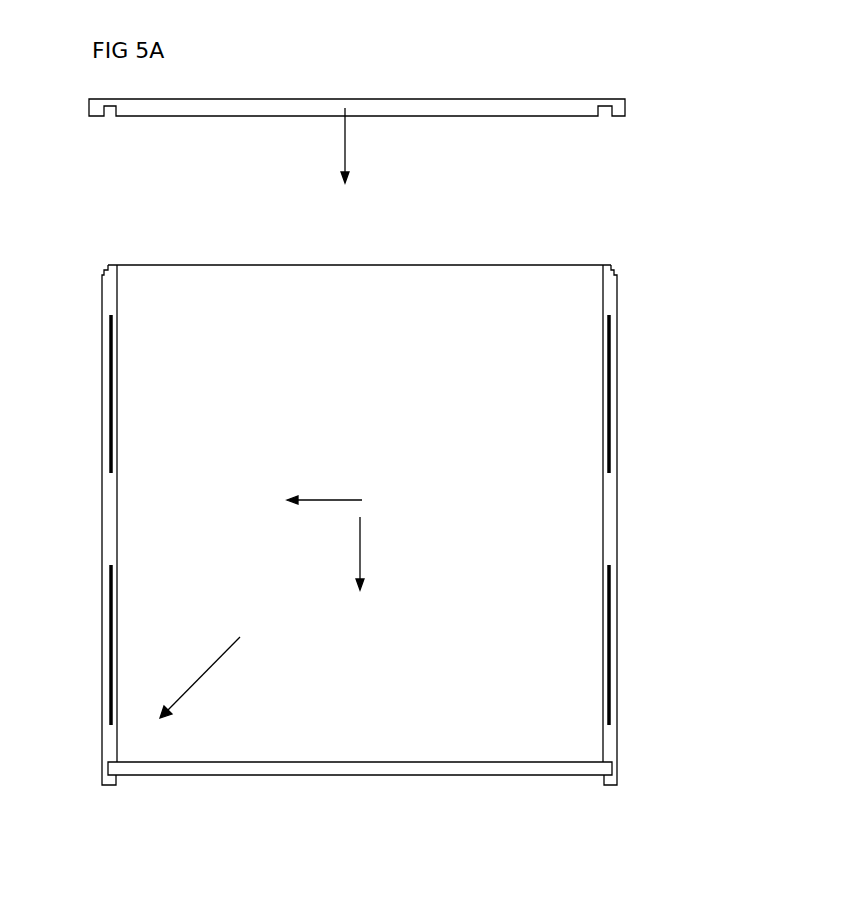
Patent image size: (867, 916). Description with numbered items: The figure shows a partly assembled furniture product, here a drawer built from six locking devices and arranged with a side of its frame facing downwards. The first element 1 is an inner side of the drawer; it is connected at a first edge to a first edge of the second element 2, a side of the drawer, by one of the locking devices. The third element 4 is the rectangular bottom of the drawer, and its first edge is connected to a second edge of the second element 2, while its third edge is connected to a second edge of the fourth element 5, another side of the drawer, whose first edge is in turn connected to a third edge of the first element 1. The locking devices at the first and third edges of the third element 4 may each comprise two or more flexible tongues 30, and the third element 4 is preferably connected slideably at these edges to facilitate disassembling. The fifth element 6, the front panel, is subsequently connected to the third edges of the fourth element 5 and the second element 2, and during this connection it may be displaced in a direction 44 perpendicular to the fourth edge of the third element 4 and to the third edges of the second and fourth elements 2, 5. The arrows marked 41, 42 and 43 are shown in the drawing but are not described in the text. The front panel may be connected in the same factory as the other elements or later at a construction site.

The first element 1 is at (402, 773).
The second element 2 is at (110, 524).
The third element 4 is at (382, 290).
The fourth element 5 is at (612, 528).
The fifth element 6 is at (404, 107).
The flexible tongues 30 is at (107, 397).
The direction arrow 41 is at (200, 677).
The direction arrow 42 is at (381, 553).
The direction arrow 43 is at (324, 484).
The direction 44 is at (362, 145).